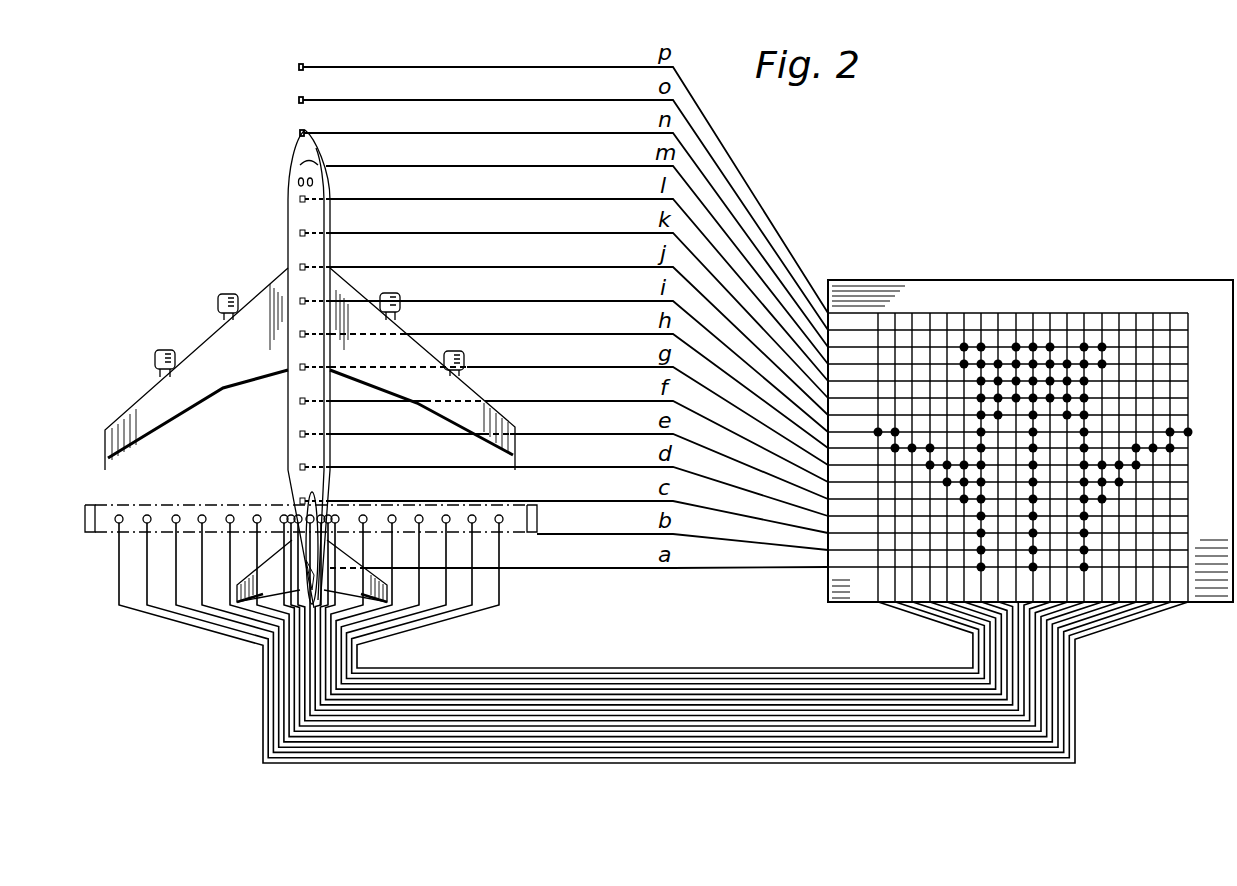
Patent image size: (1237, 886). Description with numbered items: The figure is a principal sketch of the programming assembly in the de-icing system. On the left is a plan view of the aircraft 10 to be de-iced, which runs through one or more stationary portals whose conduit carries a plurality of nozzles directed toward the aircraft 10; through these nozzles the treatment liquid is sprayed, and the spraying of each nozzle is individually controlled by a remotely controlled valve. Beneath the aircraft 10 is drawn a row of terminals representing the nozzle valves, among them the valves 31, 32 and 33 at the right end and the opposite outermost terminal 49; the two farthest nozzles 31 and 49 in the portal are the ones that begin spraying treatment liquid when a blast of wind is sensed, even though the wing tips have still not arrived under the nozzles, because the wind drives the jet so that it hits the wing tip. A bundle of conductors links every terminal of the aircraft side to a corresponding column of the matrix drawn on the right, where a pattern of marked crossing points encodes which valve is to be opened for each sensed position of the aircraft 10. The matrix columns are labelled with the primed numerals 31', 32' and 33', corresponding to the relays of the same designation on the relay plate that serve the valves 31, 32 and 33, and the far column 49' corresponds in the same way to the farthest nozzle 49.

The aircraft 10 is at (292, 201).
The valve 31 is at (665, 591).
The valve 32 is at (665, 594).
The valve 33 is at (666, 597).
The nozzle 49 is at (651, 639).
The relay 31' is at (865, 457).
The relay 32' is at (876, 477).
The relay 33' is at (918, 480).
The display matrix column conductor 49' is at (1205, 457).